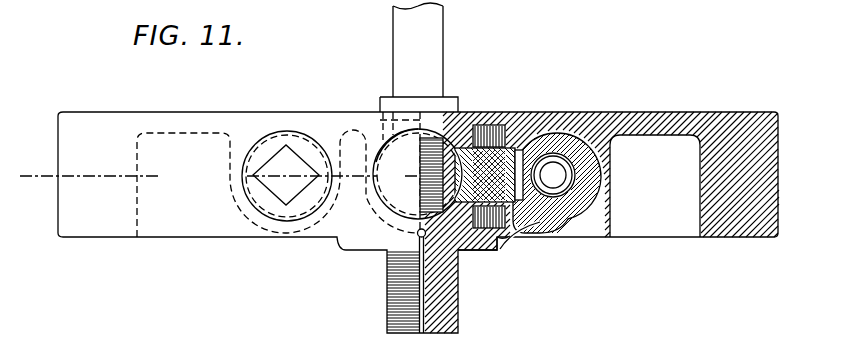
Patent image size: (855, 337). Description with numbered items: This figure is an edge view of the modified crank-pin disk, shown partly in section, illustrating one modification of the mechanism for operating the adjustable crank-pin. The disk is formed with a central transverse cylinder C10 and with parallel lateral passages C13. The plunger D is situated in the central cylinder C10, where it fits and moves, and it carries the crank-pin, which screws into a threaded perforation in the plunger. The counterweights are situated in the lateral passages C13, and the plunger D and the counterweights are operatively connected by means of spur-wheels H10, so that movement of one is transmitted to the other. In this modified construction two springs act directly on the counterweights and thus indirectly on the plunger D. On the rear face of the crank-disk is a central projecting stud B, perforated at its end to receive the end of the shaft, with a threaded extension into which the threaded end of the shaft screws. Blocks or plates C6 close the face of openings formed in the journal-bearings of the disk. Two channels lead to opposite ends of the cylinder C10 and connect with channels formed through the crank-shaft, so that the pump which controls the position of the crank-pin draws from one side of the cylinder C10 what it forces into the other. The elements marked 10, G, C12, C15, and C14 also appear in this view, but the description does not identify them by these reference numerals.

The bed plate 10 is at (399, 222).
The bushing G is at (265, 143).
The lateral passages C13 is at (593, 97).
The central transverse cylinder C10 is at (384, 166).
The disc rim C12 is at (380, 160).
The plunger D is at (427, 160).
The blocks or plates C6 is at (494, 133).
The spur-wheels H10 is at (500, 133).
The central projecting stud B is at (458, 298).
The lug C15 is at (487, 250).
The lug C14 is at (507, 235).